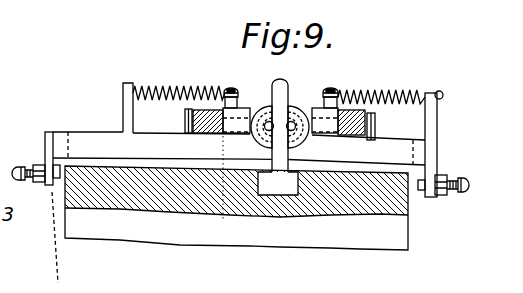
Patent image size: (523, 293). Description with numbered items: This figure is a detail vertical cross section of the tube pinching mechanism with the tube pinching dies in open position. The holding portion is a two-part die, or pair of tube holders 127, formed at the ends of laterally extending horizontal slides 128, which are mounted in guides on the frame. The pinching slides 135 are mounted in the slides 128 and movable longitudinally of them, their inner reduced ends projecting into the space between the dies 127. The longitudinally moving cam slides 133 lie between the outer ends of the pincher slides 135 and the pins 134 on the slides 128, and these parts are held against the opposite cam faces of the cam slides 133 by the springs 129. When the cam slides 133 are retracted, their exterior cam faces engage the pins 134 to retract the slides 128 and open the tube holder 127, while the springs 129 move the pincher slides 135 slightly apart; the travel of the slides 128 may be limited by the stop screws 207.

The tube holders 127 is at (267, 107).
The horizontal slides 128 is at (93, 137).
The springs 129 is at (153, 84).
The cam slides 133 is at (218, 134).
The pins 134 is at (185, 111).
The pinching slides 135 is at (247, 107).
The stop screws 207 is at (21, 164).